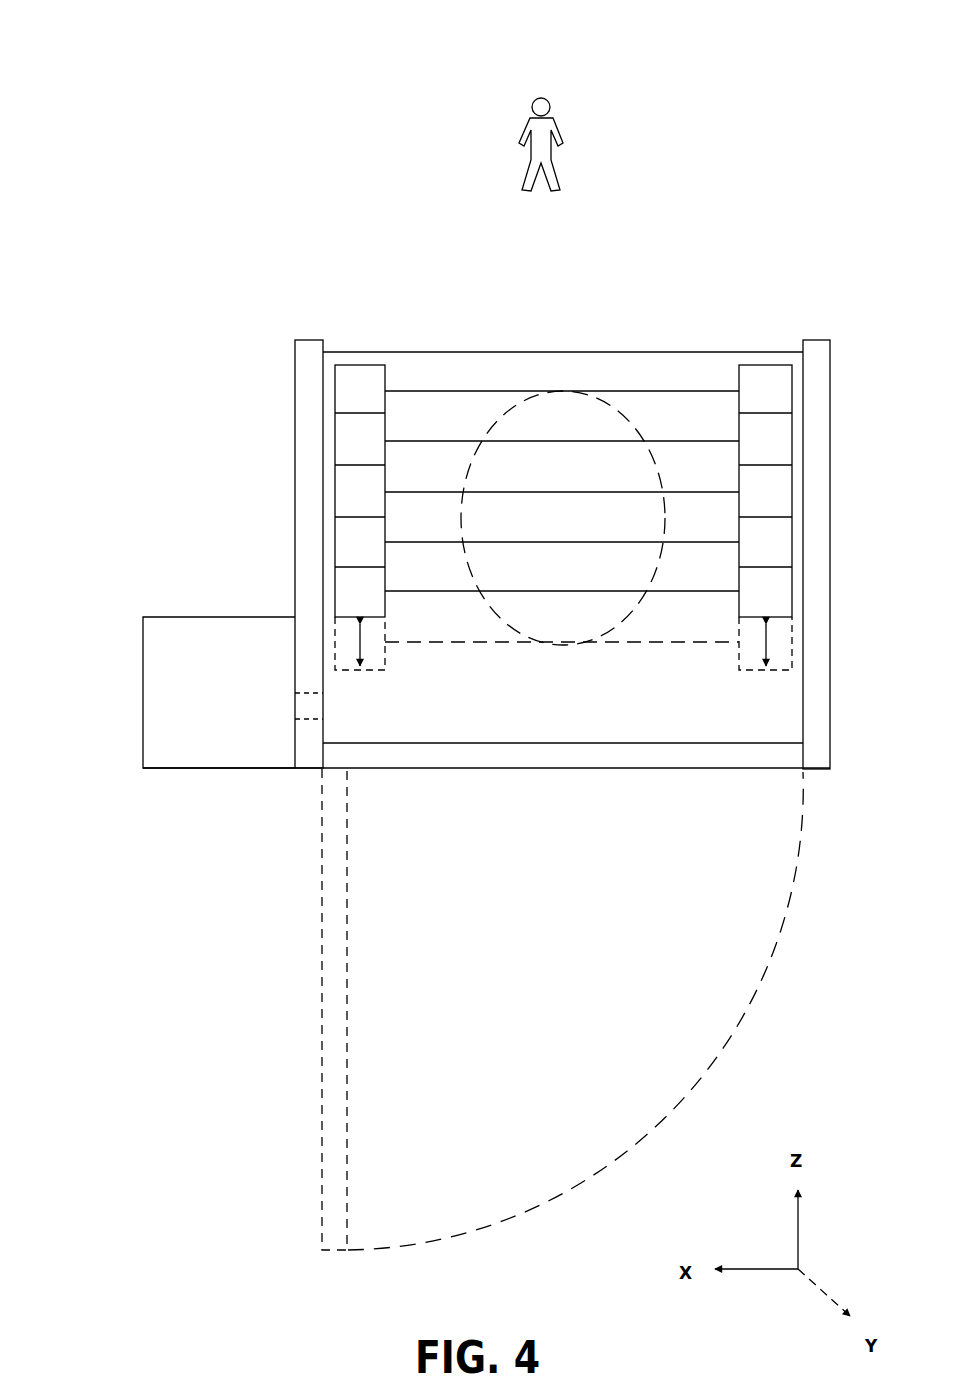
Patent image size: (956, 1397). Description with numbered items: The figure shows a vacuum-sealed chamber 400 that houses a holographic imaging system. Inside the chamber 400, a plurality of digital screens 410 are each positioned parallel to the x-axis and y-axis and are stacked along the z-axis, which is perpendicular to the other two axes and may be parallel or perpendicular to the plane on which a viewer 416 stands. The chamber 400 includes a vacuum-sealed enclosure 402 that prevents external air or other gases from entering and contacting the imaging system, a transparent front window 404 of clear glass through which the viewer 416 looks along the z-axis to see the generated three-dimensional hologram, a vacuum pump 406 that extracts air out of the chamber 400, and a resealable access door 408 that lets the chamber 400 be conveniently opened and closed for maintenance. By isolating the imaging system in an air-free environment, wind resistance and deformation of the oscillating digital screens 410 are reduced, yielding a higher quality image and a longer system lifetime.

The vacuum-sealed chamber 400 is at (86, 68).
The vacuum-sealed enclosure 402 is at (292, 376).
The transparent front window 404 is at (462, 348).
The vacuum pump 406 is at (262, 615).
The resealable access door 408 is at (442, 772).
The digital screens 410 is at (459, 490).
The viewer 416 is at (557, 163).